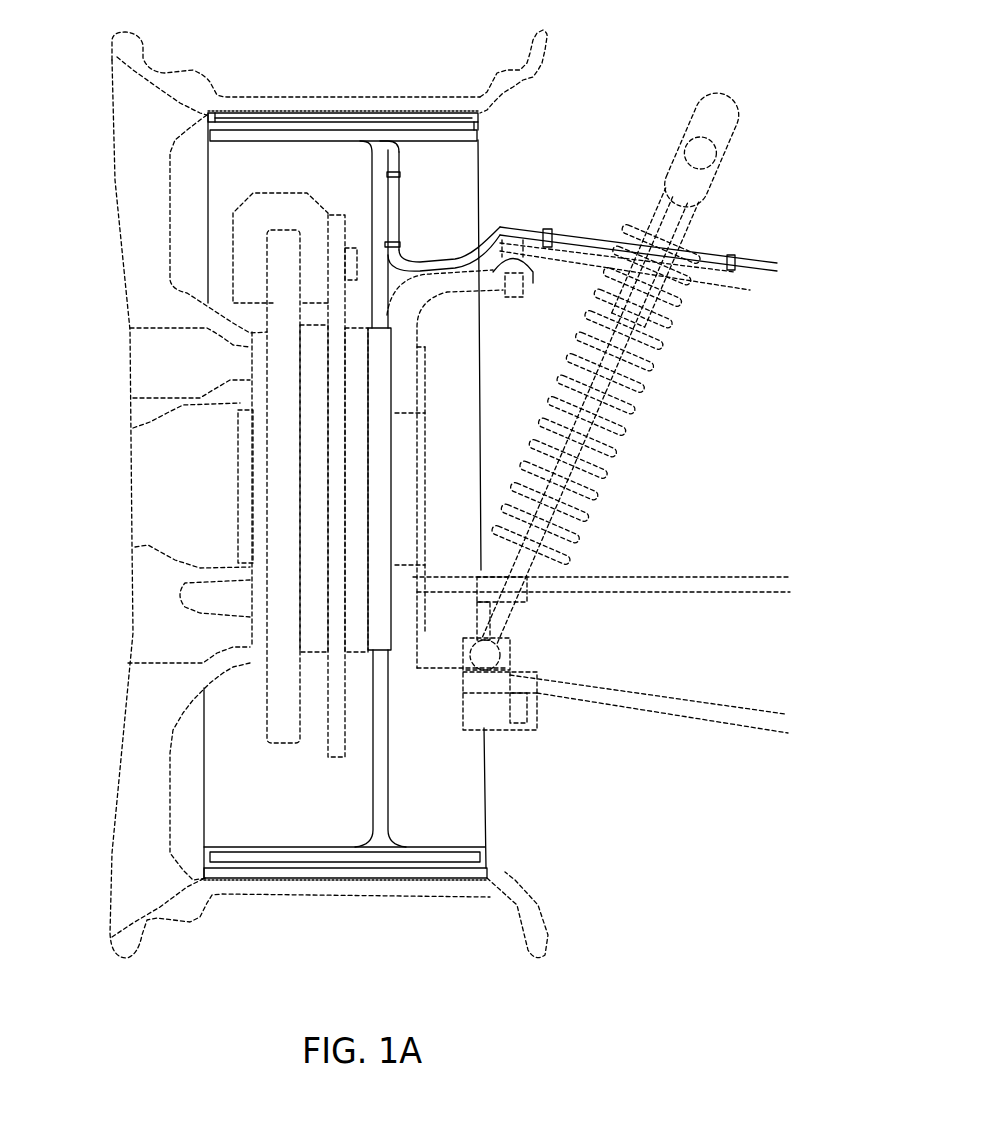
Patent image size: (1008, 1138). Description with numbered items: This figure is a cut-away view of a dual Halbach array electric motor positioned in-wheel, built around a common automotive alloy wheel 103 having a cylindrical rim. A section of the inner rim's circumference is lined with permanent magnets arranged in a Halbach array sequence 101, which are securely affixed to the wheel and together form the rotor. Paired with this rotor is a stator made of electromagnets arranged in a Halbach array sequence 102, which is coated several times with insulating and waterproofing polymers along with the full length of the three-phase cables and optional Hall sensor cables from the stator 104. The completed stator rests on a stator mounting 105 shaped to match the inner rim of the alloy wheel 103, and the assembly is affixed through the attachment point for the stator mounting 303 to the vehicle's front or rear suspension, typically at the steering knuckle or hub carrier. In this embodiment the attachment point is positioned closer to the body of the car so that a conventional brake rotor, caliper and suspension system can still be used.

The permanent magnets arranged in Halbach array sequence 101 is at (293, 113).
The electromagnets arranged in Halbach array sequence 102 is at (423, 131).
The alloy wheel 103 is at (483, 103).
The three-phase cables and optional Hall sensor cables from the stator 104 is at (497, 232).
The stator mounting 105 is at (437, 773).
The attachment point for the stator mounting 303 is at (376, 598).